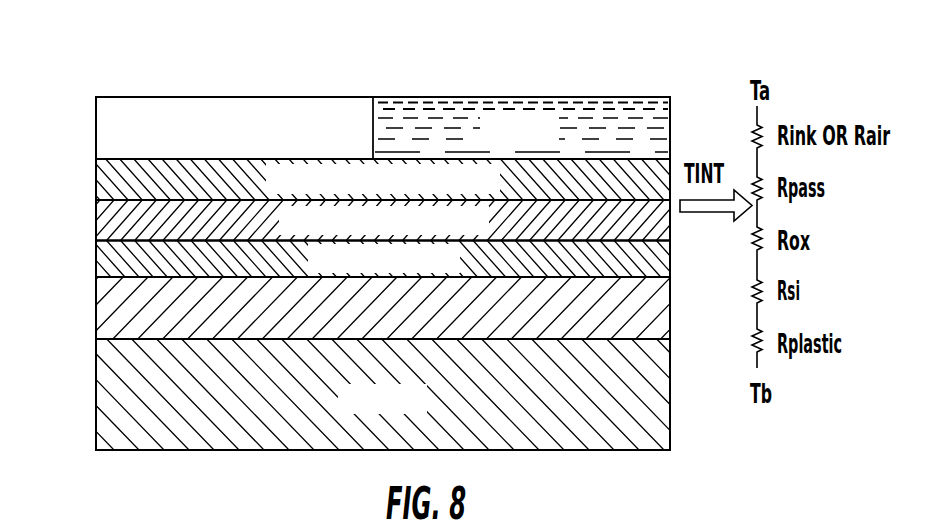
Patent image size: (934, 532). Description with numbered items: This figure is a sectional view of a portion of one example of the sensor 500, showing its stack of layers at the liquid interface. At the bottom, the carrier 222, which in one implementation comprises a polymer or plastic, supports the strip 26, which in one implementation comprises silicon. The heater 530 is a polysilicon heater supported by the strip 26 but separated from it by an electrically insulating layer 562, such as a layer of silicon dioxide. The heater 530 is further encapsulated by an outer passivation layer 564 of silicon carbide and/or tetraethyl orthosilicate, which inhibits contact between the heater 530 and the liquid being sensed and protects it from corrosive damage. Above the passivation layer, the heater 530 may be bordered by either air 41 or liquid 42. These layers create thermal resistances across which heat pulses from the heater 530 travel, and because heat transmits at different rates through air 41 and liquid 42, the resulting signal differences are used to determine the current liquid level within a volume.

The sensor 500 is at (61, 78).
The air 41 is at (178, 112).
The liquid 42 is at (584, 112).
The outer passivation layer 564 is at (96, 175).
The heater 530 is at (96, 218).
The electrically insulating layer 562 is at (96, 260).
The strip 26 is at (96, 313).
The carrier 222 is at (96, 407).